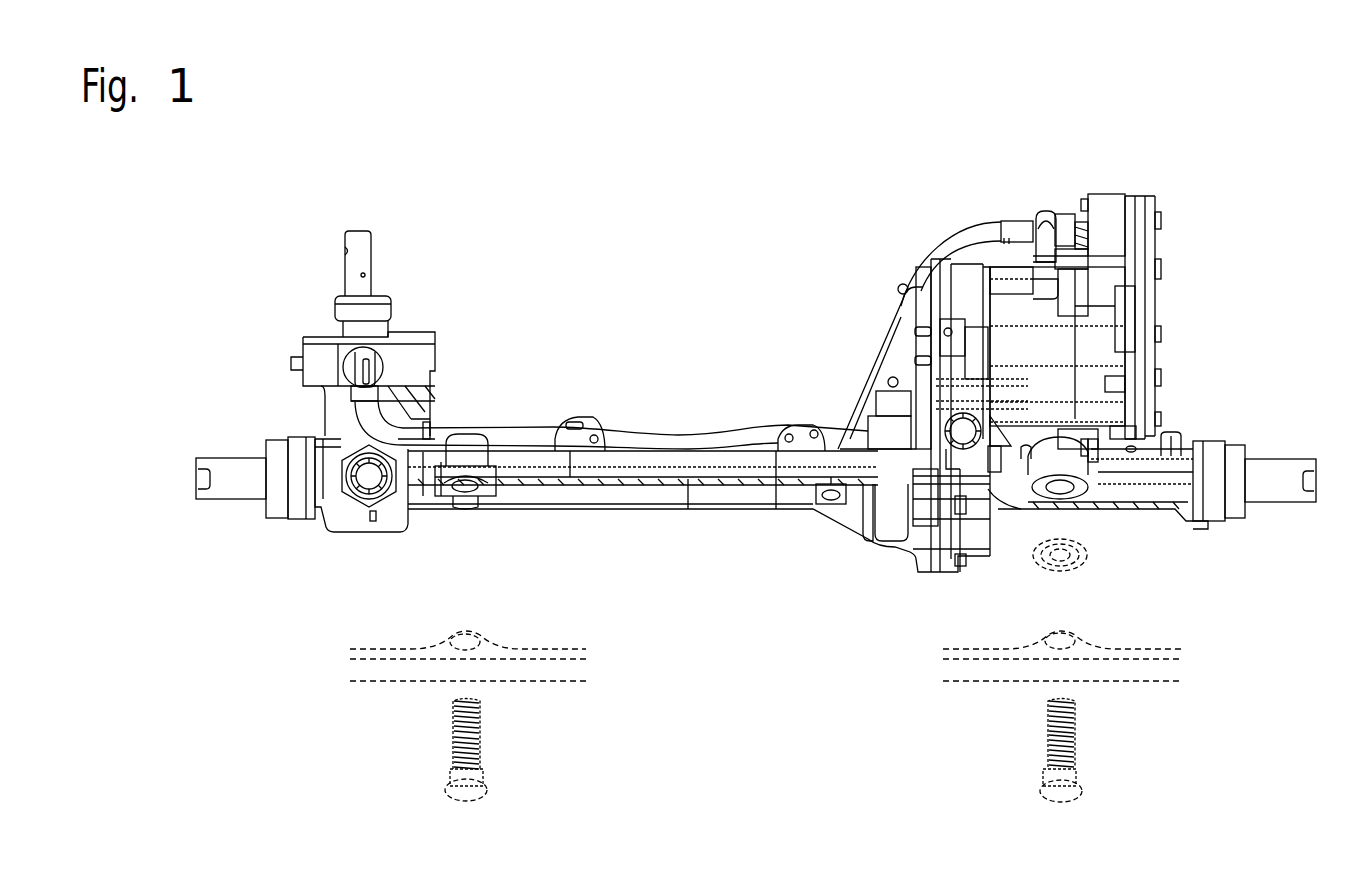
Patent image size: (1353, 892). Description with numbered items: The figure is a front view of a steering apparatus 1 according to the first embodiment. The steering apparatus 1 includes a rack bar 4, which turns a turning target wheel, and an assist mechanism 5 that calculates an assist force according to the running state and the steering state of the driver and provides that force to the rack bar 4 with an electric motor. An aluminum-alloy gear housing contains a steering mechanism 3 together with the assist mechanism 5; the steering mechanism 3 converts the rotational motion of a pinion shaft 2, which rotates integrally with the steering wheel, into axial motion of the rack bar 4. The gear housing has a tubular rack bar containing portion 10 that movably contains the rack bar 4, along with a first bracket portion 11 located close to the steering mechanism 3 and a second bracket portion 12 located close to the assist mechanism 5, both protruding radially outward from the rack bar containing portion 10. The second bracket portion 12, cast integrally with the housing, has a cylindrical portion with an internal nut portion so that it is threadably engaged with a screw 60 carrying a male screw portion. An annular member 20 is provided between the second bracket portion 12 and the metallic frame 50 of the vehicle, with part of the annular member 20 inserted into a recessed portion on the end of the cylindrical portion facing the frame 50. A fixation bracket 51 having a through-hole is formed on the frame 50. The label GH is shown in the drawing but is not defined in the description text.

The steering apparatus 1 is at (763, 296).
The pinion shaft 2 is at (378, 271).
The steering mechanism 3 is at (446, 383).
The rack bar 4 is at (1282, 467).
The assist mechanism 5 is at (1171, 238).
The rack bar containing portion 10 is at (747, 503).
The first bracket portion 11 is at (488, 490).
The second bracket portion 12 is at (1070, 462).
The annular member 20 is at (1093, 557).
The frame 50 is at (553, 672).
The fixation bracket 51 is at (1080, 632).
The screw 60 is at (440, 788).
The guide hose GH is at (706, 420).